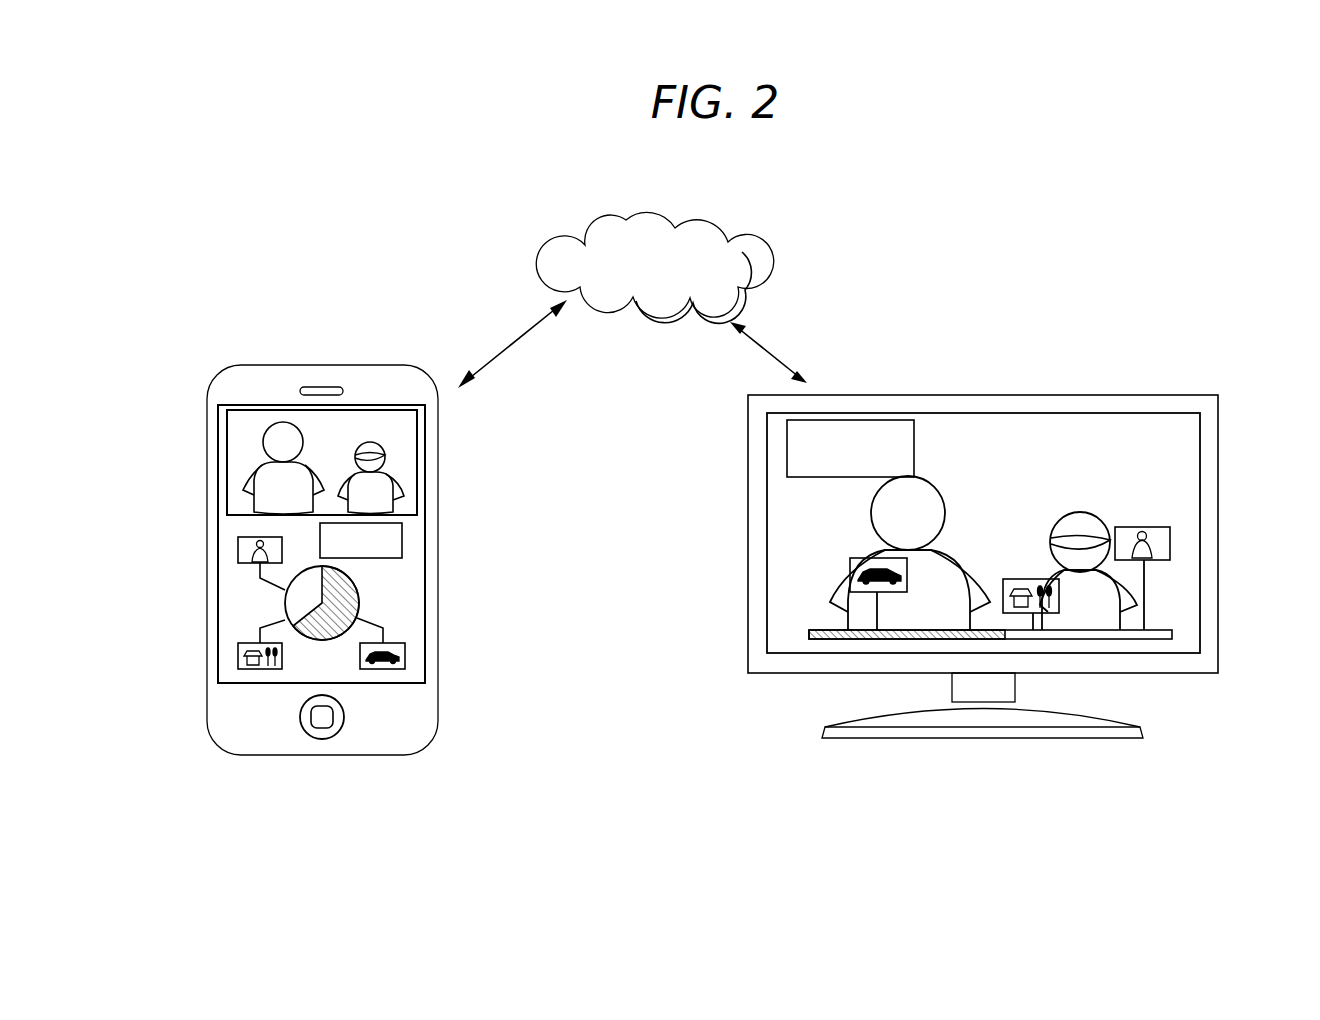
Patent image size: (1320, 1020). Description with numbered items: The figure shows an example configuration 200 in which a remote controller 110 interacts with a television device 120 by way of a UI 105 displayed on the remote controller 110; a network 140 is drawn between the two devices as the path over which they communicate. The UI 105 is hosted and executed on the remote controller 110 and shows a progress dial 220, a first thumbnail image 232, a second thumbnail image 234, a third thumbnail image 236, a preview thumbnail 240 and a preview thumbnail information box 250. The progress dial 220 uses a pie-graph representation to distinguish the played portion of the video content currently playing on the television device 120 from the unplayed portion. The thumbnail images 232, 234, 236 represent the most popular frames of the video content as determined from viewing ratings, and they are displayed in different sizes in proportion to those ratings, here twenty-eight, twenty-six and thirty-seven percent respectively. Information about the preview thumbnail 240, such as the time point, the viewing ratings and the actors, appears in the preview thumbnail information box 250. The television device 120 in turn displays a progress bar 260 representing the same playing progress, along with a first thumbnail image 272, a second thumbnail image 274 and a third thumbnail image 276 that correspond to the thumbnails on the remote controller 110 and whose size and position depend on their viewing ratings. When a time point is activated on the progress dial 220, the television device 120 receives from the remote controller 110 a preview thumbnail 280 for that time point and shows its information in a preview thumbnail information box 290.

The example configuration 200 is at (412, 193).
The network 140 is at (705, 221).
The remote controller 110 is at (378, 366).
The UI 105 is at (425, 424).
The preview thumbnail 240 is at (417, 460).
The preview thumbnail information box 250 is at (402, 543).
The progress dial 220 is at (355, 600).
The third thumbnail image 236 is at (238, 552).
The second thumbnail image 234 is at (238, 664).
The first thumbnail image 232 is at (405, 656).
The television device 120 is at (1165, 395).
The preview thumbnail 280 is at (990, 413).
The preview thumbnail information box 290 is at (914, 447).
The first thumbnail image 272 is at (863, 565).
The second thumbnail image 274 is at (1014, 579).
The third thumbnail image 276 is at (1163, 541).
The progress bar 260 is at (809, 636).